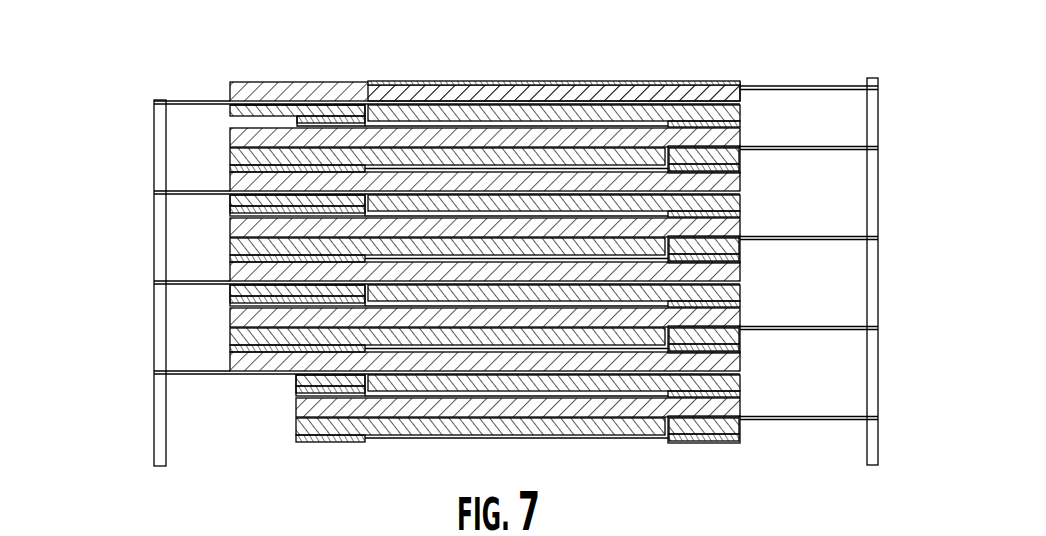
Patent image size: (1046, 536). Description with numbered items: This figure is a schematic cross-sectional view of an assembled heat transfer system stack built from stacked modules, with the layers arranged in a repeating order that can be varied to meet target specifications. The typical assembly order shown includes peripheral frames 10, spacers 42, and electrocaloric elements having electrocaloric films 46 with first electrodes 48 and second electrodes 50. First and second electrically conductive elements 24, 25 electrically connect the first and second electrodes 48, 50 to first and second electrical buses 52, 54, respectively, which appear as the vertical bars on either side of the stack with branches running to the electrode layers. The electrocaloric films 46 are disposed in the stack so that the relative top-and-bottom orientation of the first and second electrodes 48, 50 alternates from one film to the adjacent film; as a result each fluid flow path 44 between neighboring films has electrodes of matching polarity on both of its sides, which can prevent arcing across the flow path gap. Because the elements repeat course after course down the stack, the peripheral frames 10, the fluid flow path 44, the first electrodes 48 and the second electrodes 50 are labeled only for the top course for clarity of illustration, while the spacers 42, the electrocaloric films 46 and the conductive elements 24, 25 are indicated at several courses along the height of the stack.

The peripheral frame 10 is at (503, 235).
The first electrically conductive element 24 is at (288, 125).
The second electrically conductive element 25 is at (818, 150).
The spacer 42 is at (742, 119).
The fluid flow path 44 is at (448, 115).
The electrocaloric film 46 is at (718, 92).
The first electrode 48 is at (520, 83).
The second electrode 50 is at (550, 100).
The first electrical bus 52 is at (158, 249).
The second electrical bus 54 is at (872, 300).